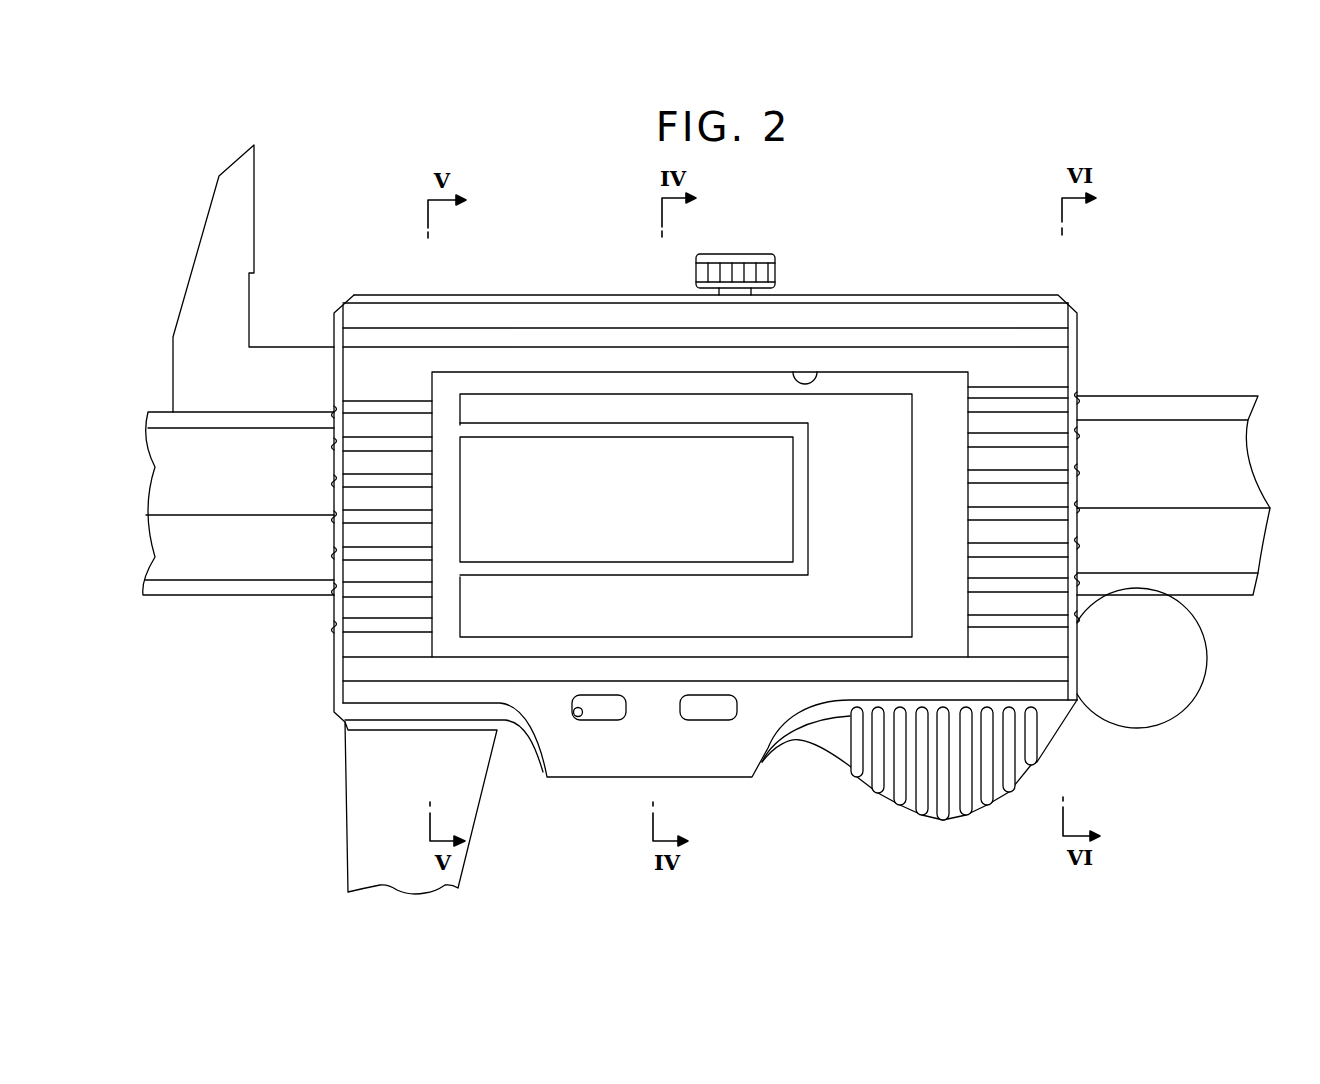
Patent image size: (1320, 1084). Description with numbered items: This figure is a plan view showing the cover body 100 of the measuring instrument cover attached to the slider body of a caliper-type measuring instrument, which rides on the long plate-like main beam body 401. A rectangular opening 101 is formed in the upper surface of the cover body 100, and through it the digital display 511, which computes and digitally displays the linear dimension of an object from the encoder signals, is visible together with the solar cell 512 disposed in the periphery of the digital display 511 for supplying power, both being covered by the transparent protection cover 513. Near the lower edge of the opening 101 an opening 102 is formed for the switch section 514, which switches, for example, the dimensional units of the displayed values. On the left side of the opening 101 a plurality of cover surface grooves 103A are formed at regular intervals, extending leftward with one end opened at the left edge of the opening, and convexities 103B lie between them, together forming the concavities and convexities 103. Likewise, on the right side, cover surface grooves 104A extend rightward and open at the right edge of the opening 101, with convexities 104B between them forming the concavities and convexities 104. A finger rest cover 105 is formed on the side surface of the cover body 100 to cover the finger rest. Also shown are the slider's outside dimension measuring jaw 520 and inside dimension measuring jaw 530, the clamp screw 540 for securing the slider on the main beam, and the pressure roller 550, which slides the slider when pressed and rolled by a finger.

The cover body 100 is at (912, 265).
The rectangular opening 101 is at (820, 370).
The opening for switch section 102 is at (580, 718).
The concavities and convexities 103 is at (360, 415).
The cover surface grooves 103A is at (400, 407).
The convexities 103B is at (368, 425).
The concavities and convexities 104 is at (1112, 469).
The cover surface grooves 104A is at (1008, 402).
The convexities 104B is at (1048, 419).
The finger rest cover 105 is at (968, 818).
The main beam body 401 is at (1227, 583).
The digital display 511 is at (512, 458).
The solar cell 512 is at (575, 410).
The transparent protection cover 513 is at (627, 383).
The switch section 514 is at (607, 710).
The outside dimension measuring jaw 520 is at (348, 850).
The inside dimension measuring jaw 530 is at (231, 164).
The clamp screw 540 is at (737, 254).
The pressure roller 550 is at (1190, 704).